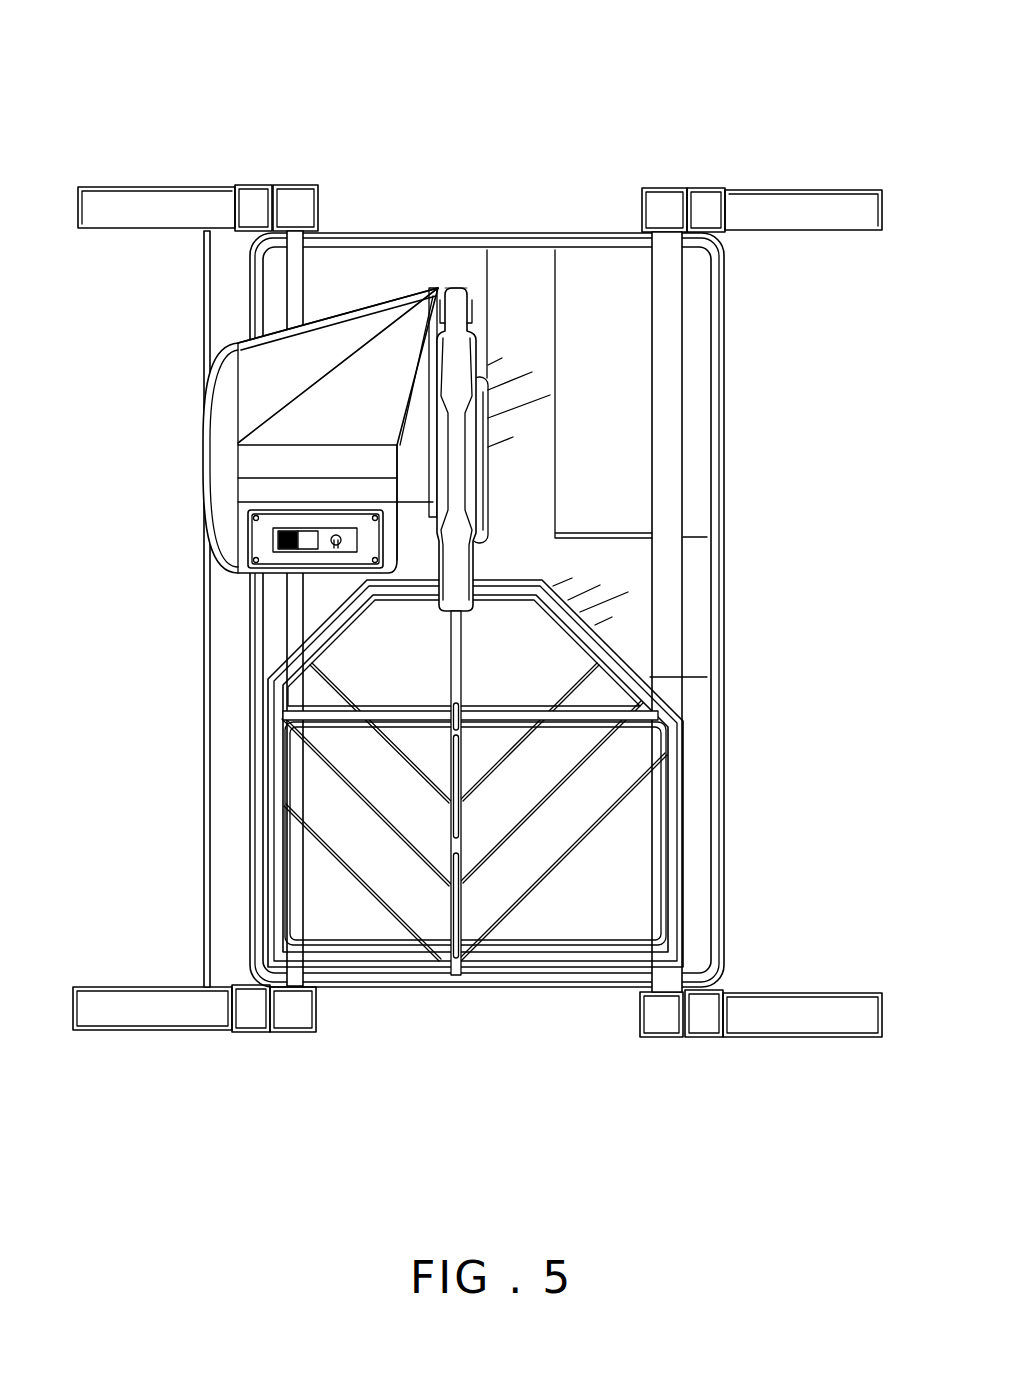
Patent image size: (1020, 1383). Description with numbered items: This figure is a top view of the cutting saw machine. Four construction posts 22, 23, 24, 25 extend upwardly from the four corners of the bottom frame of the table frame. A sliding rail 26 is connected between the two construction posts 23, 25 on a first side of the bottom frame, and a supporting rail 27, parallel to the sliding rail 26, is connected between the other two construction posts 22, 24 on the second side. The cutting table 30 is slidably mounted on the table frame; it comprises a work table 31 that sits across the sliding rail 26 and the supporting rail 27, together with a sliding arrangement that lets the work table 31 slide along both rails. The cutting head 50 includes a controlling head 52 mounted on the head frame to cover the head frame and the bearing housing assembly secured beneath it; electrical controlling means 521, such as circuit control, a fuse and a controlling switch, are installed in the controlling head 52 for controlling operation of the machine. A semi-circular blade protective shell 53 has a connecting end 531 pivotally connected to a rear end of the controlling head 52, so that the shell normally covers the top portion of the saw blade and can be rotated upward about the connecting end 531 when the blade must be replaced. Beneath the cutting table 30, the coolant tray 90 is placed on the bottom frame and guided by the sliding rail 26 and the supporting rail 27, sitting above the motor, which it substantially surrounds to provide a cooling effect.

The construction post 22 is at (702, 1017).
The construction post 23 is at (252, 1012).
The construction post 24 is at (658, 203).
The construction post 25 is at (298, 207).
The sliding rail 26 is at (293, 297).
The supporting rail 27 is at (668, 490).
The cutting table 30 is at (584, 772).
The work table 31 is at (638, 857).
The cutting head 50 is at (436, 438).
The controlling head 52 is at (272, 387).
The blade protective shell 53 is at (468, 458).
The coolant tray 90 is at (715, 437).
The electrical controlling means 521 is at (258, 544).
The connecting end 531 is at (455, 307).